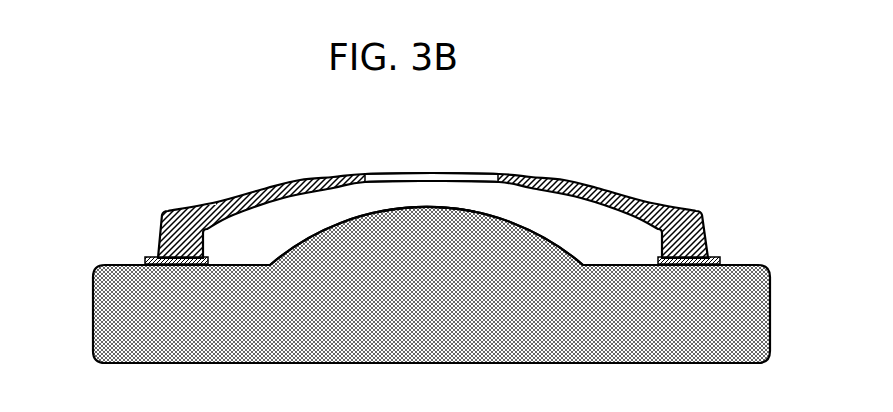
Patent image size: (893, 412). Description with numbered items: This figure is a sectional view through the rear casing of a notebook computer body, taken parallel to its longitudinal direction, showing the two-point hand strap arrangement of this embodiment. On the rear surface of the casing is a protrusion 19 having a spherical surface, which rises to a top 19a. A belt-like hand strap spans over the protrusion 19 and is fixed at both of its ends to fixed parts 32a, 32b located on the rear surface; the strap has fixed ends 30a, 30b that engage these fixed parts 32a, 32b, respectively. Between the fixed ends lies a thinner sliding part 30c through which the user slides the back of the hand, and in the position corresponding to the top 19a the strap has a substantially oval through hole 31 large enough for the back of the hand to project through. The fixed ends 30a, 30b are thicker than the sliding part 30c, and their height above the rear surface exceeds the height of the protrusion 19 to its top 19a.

The protrusion 19 is at (480, 238).
The top of protrusion 19a is at (440, 207).
The fixed end 30a is at (173, 210).
The fixed end 30b is at (687, 222).
The sliding part 30c is at (270, 188).
The through hole 31 is at (427, 178).
The fixed part 32a is at (147, 257).
The fixed part 32b is at (717, 257).